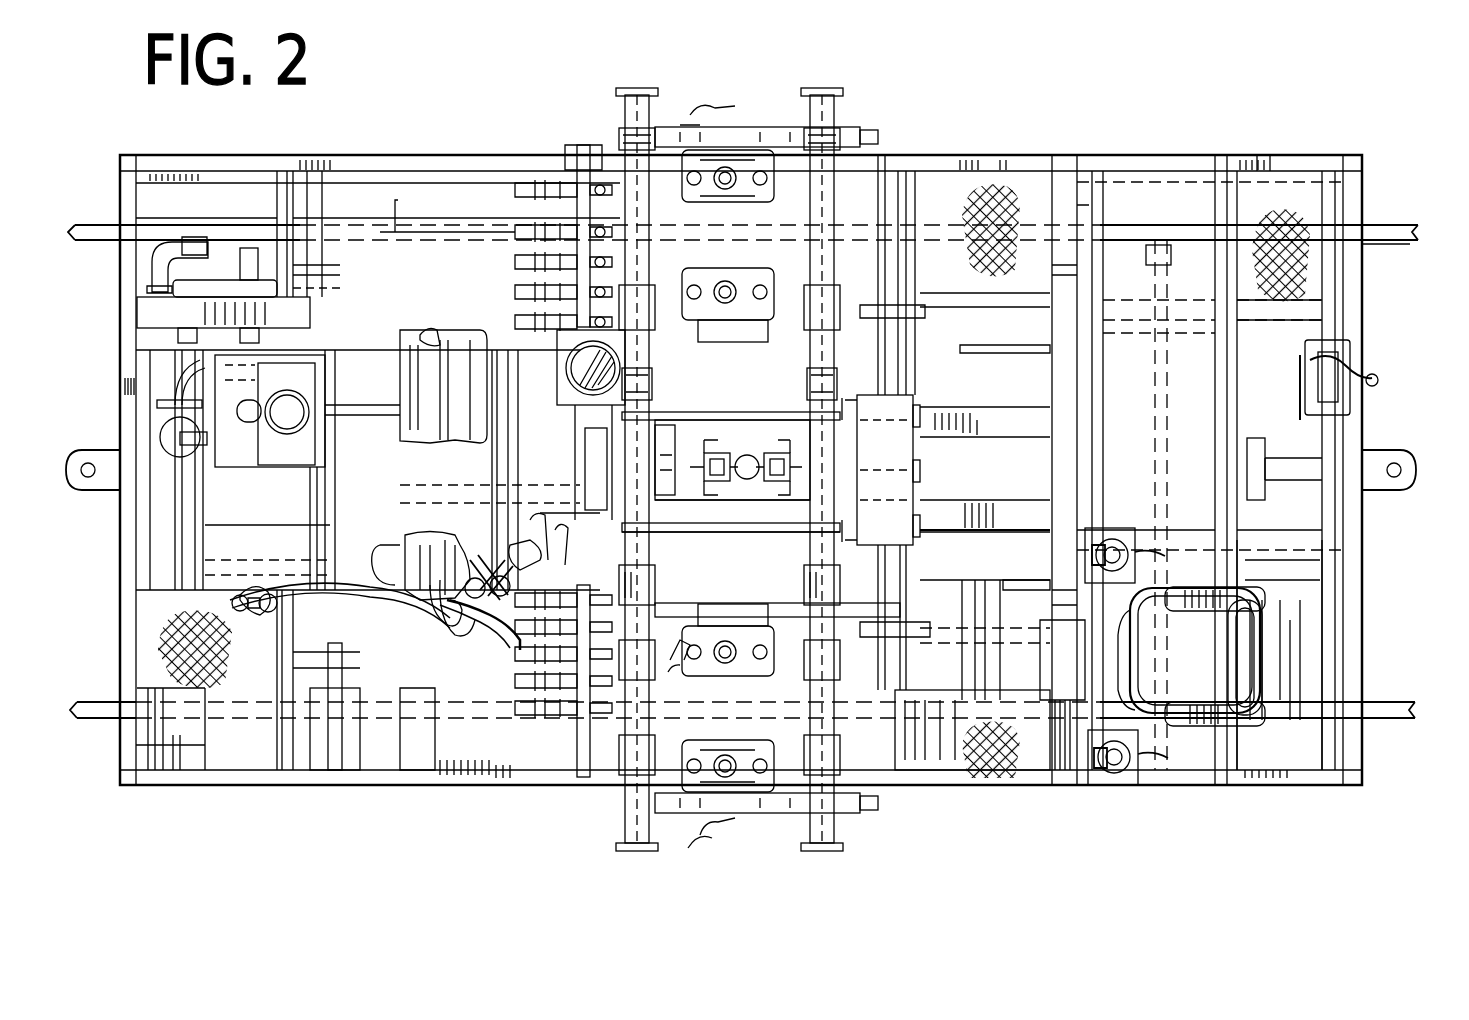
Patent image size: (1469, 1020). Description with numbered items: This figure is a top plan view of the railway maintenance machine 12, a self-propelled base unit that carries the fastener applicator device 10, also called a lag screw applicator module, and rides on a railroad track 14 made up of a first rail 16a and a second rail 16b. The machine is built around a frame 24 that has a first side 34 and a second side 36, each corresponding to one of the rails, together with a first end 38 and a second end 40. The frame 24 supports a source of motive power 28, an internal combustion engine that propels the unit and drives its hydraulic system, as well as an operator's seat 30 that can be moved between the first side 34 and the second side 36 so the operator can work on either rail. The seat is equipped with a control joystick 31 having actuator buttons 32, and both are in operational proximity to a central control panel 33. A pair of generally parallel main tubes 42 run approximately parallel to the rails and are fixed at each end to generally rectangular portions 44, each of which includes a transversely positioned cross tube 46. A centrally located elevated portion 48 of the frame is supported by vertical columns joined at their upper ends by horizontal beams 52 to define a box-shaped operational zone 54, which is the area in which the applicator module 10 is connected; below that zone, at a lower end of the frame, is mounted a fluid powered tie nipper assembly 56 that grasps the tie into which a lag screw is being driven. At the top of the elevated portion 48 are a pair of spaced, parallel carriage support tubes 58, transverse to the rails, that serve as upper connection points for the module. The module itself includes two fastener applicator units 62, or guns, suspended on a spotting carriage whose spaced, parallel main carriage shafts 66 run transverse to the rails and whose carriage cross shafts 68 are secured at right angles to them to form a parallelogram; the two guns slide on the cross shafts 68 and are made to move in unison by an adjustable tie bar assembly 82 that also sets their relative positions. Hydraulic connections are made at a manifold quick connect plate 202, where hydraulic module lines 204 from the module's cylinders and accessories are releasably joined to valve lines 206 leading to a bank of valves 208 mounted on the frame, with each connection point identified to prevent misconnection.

The fastener applicator device 10 is at (932, 126).
The railway maintenance machine 12 is at (1282, 152).
The railroad track 14 is at (1385, 222).
The first rail 16a is at (1395, 700).
The second rail 16b is at (1398, 244).
The frame 24 is at (1340, 775).
The source of motive power 28 is at (215, 508).
The operator's seat 30 is at (1258, 772).
The control joystick 31 is at (1102, 782).
The actuator buttons 32 is at (1128, 780).
The central control panel 33 is at (918, 465).
The first side 34 is at (285, 775).
The second side 36 is at (445, 155).
The first end 38 is at (1362, 428).
The second end 40 is at (118, 384).
The main tubes 42 is at (944, 412).
The generally rectangular portions 44 is at (1000, 790).
The cross tube 46 is at (1068, 775).
The elevated portion 48 is at (656, 548).
The horizontal beams 52 is at (748, 425).
The operational zone 54 is at (715, 440).
The fluid powered tie nipper assembly 56 is at (740, 480).
The carriage support tubes 58 is at (652, 405).
The fastener applicator units 62 is at (725, 108).
The main carriage shafts 66 is at (616, 832).
The carriage cross shafts 68 is at (788, 602).
The adjustable tie bar assembly 82 is at (668, 672).
The manifold quick connect plate 202 is at (585, 145).
The hydraulic module lines 204 is at (618, 242).
The valve lines 206 is at (515, 228).
The valves 208 is at (425, 345).